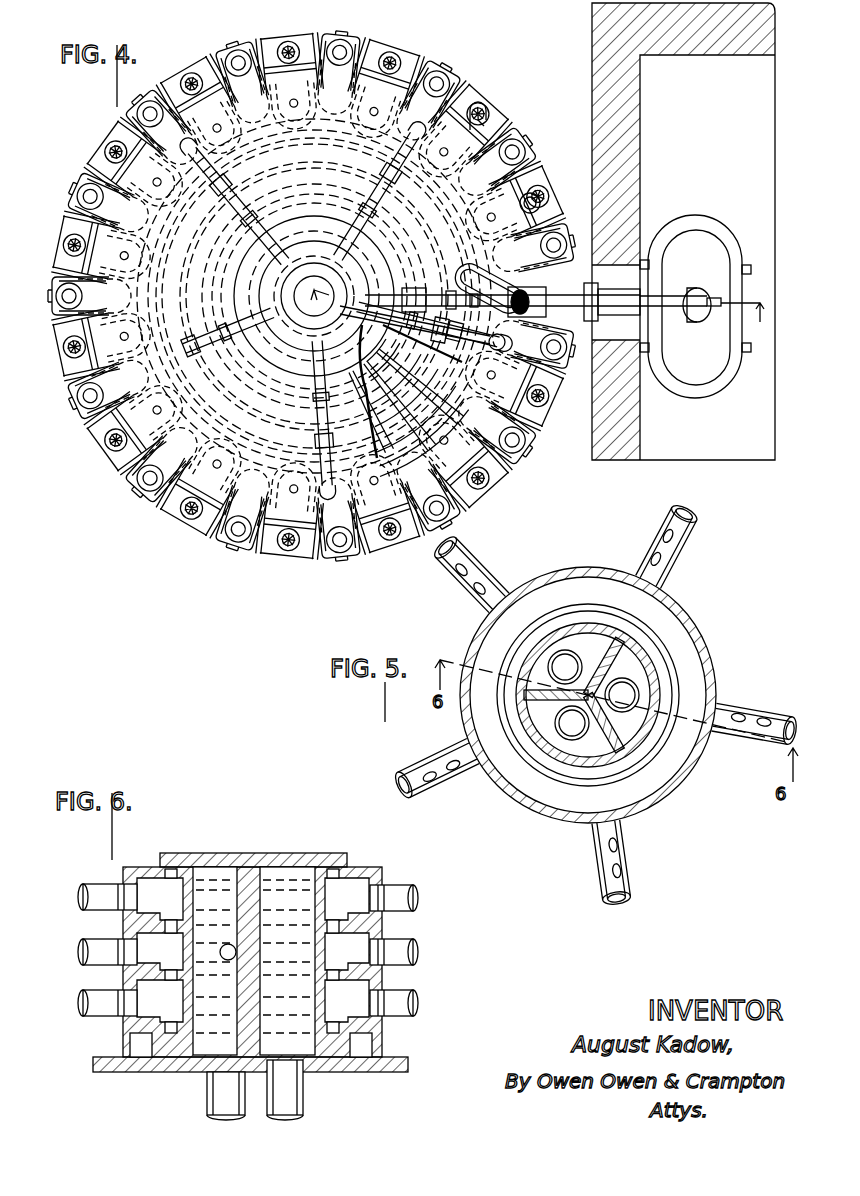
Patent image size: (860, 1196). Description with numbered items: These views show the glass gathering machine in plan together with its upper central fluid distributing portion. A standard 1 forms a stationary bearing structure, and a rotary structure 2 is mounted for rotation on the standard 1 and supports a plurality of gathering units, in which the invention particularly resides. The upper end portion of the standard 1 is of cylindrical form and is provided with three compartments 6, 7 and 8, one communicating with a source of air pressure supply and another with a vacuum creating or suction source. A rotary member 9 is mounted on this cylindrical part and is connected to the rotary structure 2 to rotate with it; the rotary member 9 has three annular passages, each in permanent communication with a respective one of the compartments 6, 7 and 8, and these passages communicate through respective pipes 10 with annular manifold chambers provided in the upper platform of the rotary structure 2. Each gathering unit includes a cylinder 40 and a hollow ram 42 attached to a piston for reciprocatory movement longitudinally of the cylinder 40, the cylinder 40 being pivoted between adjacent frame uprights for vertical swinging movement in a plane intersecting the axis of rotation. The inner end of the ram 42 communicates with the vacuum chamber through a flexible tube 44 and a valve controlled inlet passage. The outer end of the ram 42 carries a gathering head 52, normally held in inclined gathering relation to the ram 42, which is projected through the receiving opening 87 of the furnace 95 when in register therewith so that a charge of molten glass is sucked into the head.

In FIG. 6, the standard 1 is at (256, 864).
In FIG. 4, the rotary structure 2 is at (243, 495).
In FIG. 5, the compartment 6 is at (571, 665).
In FIG. 5, the compartment 7 is at (622, 685).
In FIG. 5, the compartment 8 is at (576, 730).
In FIG. 5, the rotary member 9 is at (700, 641).
In FIG. 6, the rotary member 9 is at (368, 880).
In FIG. 4, the pipes 10 is at (318, 424).
In FIG. 5, the pipes 10 is at (673, 563).
In FIG. 6, the pipes 10 is at (402, 896).
In FIG. 4, the cylinder 40 is at (540, 199).
In FIG. 4, the ram 42 is at (652, 297).
In FIG. 4, the flexible tube 44 is at (434, 299).
In FIG. 4, the gathering head 52 is at (702, 320).
In FIG. 4, the receiving opening 87 is at (612, 278).
In FIG. 4, the furnace 95 is at (683, 231).